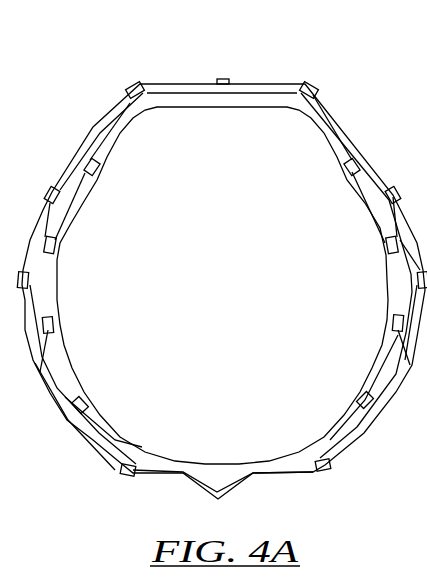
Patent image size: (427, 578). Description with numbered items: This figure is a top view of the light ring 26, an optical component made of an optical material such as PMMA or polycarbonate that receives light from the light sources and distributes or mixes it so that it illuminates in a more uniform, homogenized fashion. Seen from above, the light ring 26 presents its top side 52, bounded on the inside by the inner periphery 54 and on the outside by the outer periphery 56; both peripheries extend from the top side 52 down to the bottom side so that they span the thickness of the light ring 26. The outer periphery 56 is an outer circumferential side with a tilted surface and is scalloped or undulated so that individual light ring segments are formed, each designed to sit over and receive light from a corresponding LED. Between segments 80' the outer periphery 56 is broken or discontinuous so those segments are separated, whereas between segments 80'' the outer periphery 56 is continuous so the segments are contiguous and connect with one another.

The light ring 26 is at (183, 66).
The top side 52 is at (317, 447).
The inner periphery 54 is at (221, 110).
The outer periphery 56 is at (327, 100).
The light ring segments 80' is at (88, 425).
The light ring segments 80'' is at (265, 425).